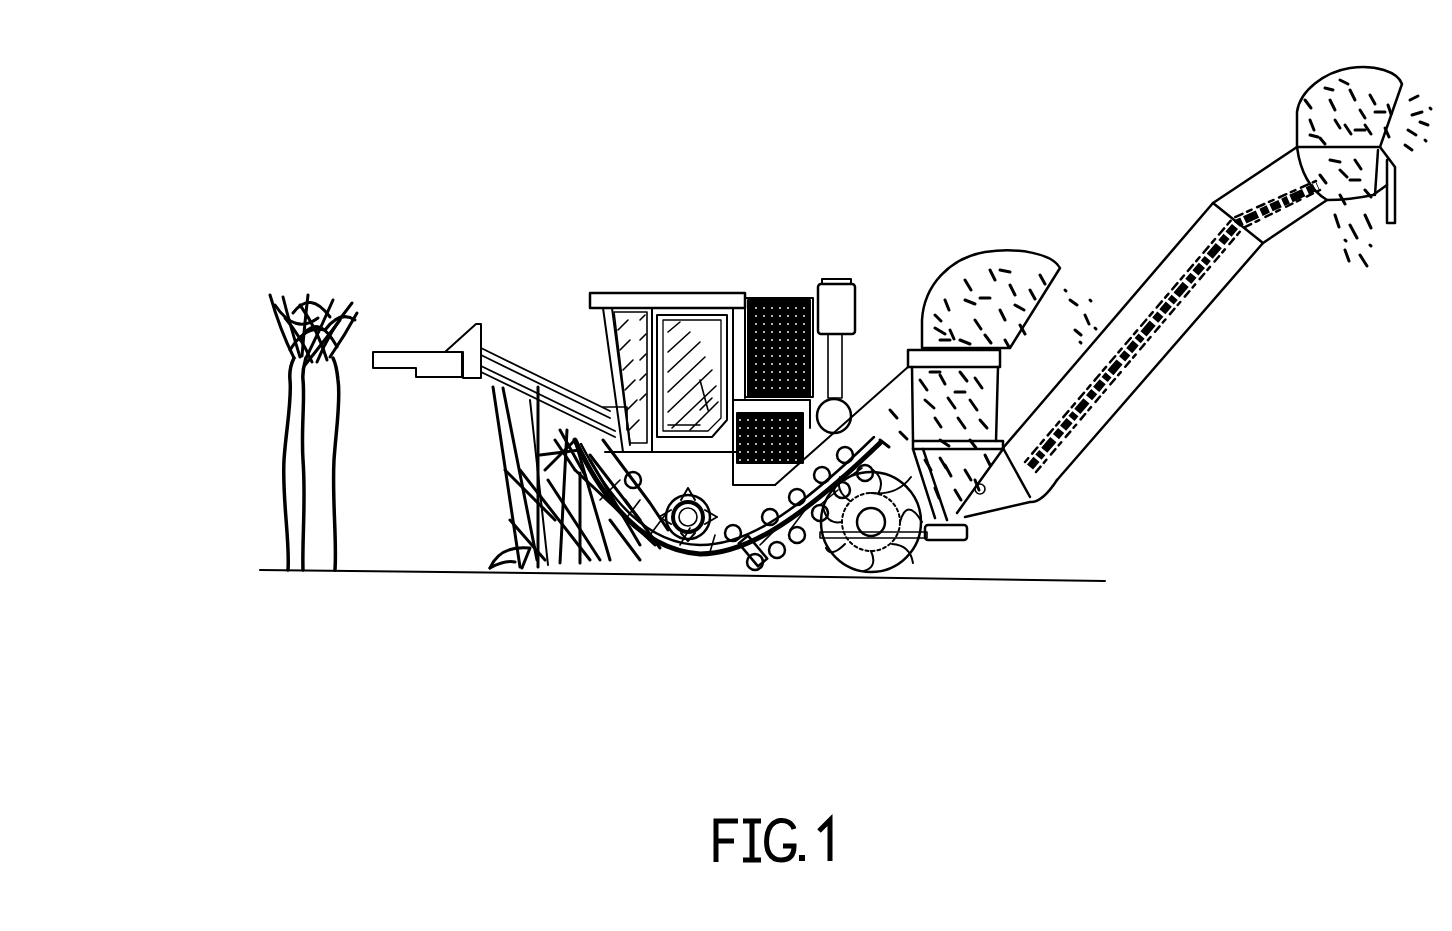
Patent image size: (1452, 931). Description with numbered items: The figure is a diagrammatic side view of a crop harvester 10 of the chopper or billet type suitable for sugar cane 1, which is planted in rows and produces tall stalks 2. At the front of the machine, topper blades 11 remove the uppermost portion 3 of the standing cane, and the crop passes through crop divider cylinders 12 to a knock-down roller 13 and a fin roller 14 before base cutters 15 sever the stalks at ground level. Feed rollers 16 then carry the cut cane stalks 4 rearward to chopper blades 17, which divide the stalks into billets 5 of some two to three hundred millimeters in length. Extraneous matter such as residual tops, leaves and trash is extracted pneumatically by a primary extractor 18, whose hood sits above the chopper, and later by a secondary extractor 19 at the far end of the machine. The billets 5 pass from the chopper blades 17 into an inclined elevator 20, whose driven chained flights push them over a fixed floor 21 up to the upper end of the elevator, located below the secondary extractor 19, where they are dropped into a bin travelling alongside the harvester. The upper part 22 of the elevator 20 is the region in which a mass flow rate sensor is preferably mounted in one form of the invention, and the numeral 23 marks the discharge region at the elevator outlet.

The sugar cane 1 is at (260, 540).
The stalks 2 is at (270, 430).
The uppermost portion 3 is at (282, 292).
The cut cane stalks 4 is at (895, 580).
The billets 5 is at (906, 380).
The crop harvester 10 is at (650, 210).
The topper blades 11 is at (422, 344).
The crop divider cylinders 12 is at (512, 522).
The knock-down roller 13 is at (645, 562).
The fin roller 14 is at (712, 577).
The base cutters 15 is at (740, 578).
The feed rollers 16 is at (797, 563).
The chopper blades 17 is at (967, 517).
The primary extractor 18 is at (988, 242).
The secondary extractor 19 is at (1298, 90).
The inclined elevator 20 is at (1137, 402).
The fixed floor 21 is at (1180, 303).
The upper part of the elevator 22 is at (1240, 170).
The discharge spout 23 is at (1270, 215).